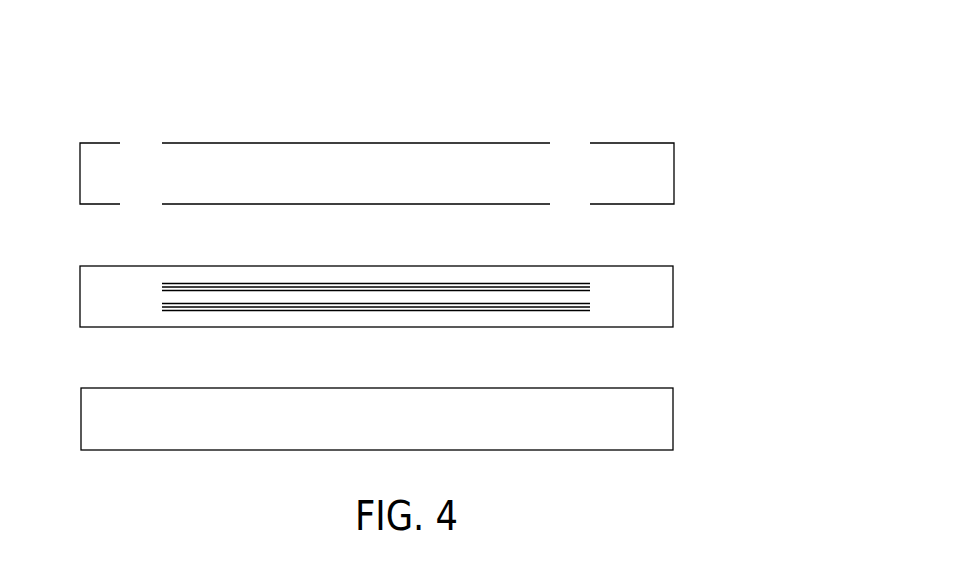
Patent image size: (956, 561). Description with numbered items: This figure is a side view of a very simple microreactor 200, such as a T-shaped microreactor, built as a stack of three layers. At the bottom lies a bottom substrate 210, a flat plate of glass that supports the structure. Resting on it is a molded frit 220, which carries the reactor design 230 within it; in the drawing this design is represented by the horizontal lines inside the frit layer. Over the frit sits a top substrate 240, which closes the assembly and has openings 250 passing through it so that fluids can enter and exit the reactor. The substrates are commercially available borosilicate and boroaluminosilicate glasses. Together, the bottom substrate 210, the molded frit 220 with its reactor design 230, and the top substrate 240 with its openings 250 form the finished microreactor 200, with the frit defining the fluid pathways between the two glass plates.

The microreactor 200 is at (658, 87).
The bottom substrate 210 is at (673, 425).
The molded frit 220 is at (673, 302).
The reactor design 230 is at (610, 283).
The top substrate 240 is at (674, 158).
The openings 250 is at (572, 130).